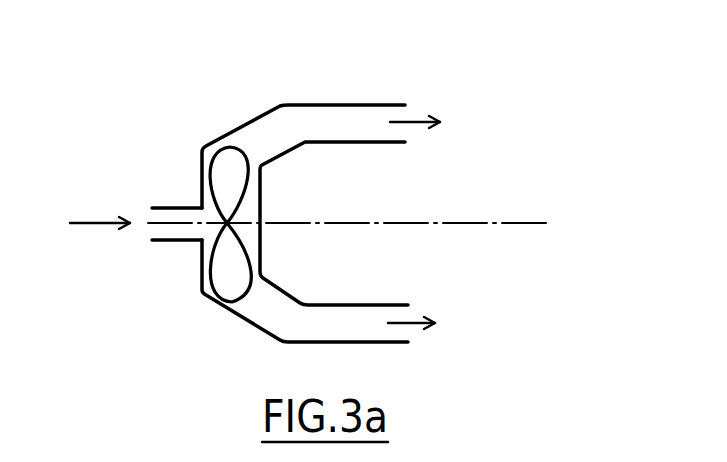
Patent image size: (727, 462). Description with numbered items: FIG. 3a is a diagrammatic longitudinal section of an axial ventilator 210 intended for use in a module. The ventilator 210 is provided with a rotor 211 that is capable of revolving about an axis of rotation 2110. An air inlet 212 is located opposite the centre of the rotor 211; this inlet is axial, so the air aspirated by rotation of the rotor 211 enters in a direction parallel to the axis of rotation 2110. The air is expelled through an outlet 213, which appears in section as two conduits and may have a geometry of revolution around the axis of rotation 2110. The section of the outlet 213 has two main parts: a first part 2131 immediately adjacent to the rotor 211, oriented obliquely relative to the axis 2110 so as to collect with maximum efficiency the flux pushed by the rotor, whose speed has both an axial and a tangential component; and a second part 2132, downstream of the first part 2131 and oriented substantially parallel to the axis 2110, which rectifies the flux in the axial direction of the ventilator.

The ventilator 210 is at (163, 62).
The rotor 211 is at (229, 268).
The air inlet 212 is at (175, 220).
The outlet 213 is at (371, 125).
The first part 2131 is at (275, 132).
The second part 2132 is at (337, 115).
The axis of rotation 2110 is at (518, 225).